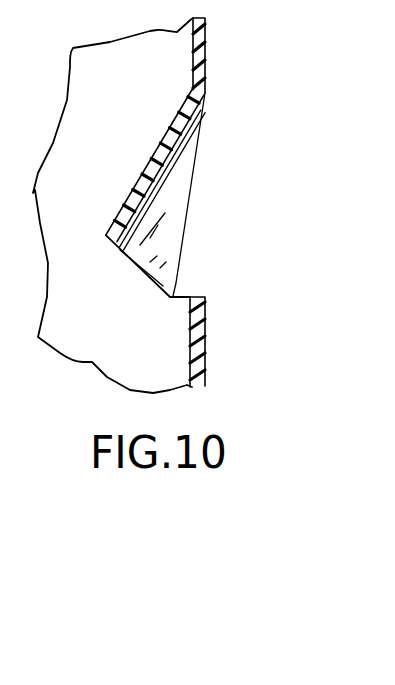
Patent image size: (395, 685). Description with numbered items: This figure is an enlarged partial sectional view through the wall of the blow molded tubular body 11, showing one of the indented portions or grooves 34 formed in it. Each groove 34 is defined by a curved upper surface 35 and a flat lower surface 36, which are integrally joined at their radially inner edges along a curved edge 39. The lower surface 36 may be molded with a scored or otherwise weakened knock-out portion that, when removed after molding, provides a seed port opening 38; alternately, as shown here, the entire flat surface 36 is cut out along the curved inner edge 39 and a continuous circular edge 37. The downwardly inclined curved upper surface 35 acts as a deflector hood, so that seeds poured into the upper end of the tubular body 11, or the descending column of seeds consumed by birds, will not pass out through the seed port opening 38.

The tubular body 11 is at (205, 55).
The groove 34 is at (205, 188).
The curved upper surface 35 is at (190, 157).
The flat lower surface 36 is at (143, 257).
The continuous circular edge 37 is at (192, 296).
The seed port opening 38 is at (170, 277).
The curved edge 39 is at (107, 236).